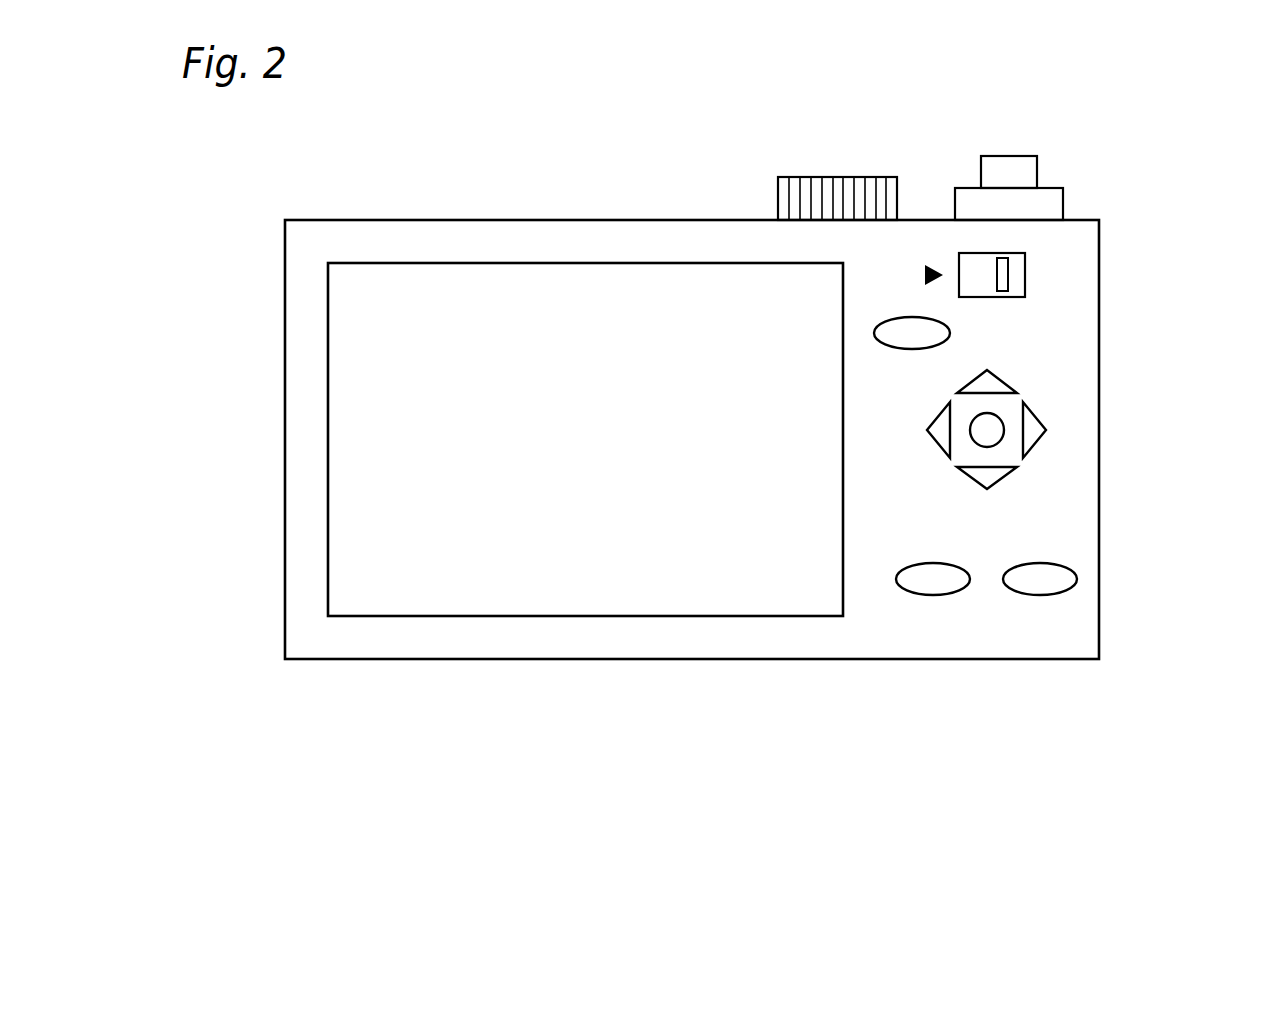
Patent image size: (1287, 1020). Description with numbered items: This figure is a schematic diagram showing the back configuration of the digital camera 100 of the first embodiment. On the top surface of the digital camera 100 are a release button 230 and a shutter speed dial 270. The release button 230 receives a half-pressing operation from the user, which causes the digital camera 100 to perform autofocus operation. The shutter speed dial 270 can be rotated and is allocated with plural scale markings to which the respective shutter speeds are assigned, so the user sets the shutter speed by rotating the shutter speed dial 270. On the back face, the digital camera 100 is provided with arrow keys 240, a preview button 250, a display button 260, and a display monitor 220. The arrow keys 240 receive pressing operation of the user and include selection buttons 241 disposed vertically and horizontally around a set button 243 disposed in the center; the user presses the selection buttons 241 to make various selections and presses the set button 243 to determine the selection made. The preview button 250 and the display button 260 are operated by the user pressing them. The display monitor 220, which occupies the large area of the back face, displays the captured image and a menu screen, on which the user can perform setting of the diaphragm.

The digital camera 100 is at (373, 676).
The display monitor 220 is at (477, 616).
The release button 230 is at (1037, 170).
The arrow keys 240 is at (1104, 421).
The selection buttons 241 is at (1046, 424).
The set button 243 is at (997, 445).
The preview button 250 is at (1077, 575).
The display button 260 is at (898, 590).
The shutter speed dial 270 is at (810, 177).